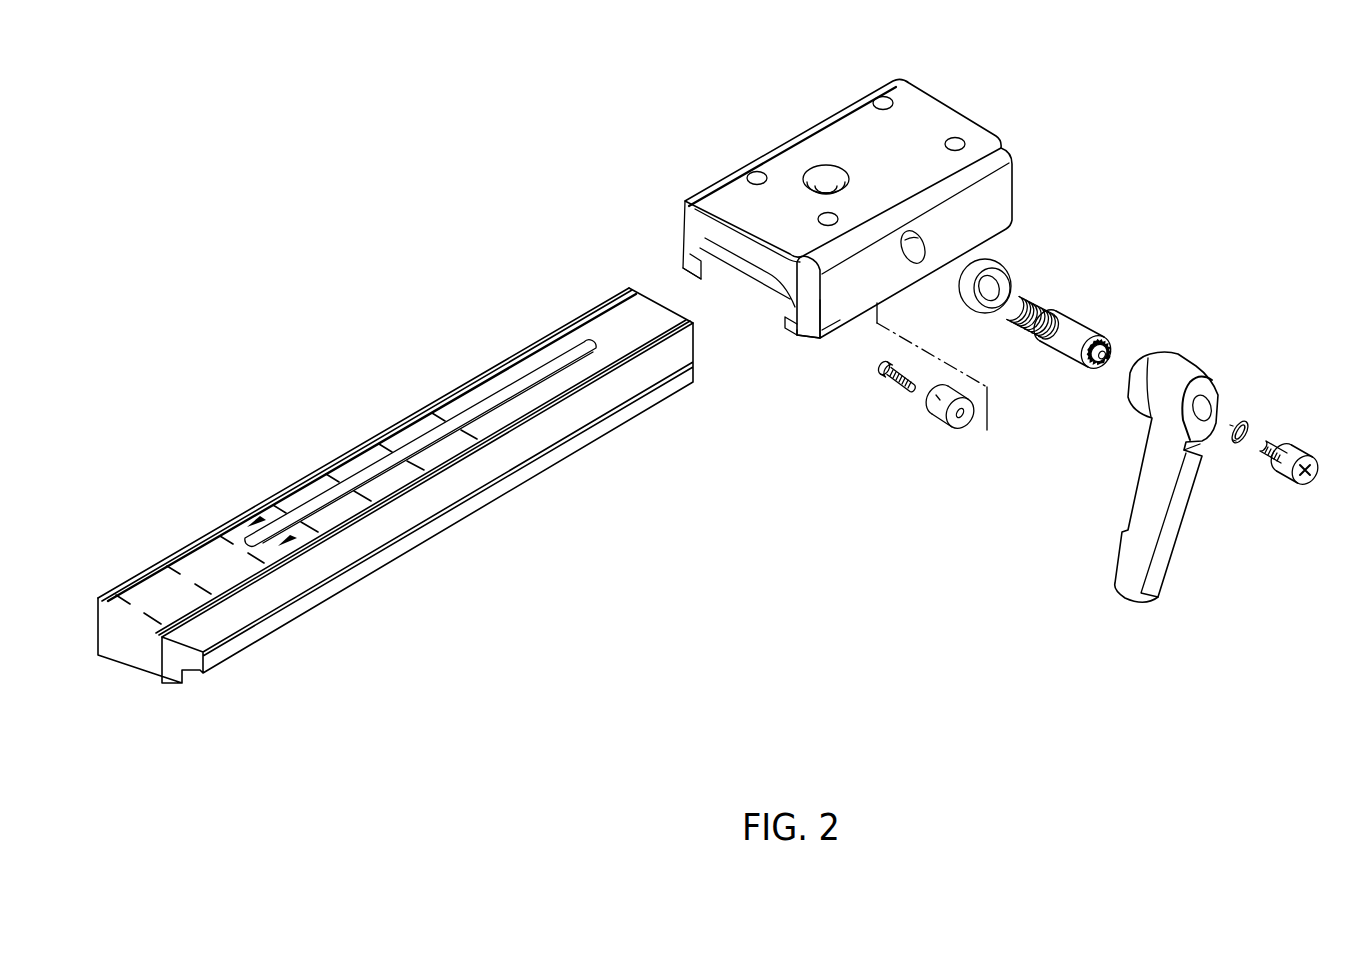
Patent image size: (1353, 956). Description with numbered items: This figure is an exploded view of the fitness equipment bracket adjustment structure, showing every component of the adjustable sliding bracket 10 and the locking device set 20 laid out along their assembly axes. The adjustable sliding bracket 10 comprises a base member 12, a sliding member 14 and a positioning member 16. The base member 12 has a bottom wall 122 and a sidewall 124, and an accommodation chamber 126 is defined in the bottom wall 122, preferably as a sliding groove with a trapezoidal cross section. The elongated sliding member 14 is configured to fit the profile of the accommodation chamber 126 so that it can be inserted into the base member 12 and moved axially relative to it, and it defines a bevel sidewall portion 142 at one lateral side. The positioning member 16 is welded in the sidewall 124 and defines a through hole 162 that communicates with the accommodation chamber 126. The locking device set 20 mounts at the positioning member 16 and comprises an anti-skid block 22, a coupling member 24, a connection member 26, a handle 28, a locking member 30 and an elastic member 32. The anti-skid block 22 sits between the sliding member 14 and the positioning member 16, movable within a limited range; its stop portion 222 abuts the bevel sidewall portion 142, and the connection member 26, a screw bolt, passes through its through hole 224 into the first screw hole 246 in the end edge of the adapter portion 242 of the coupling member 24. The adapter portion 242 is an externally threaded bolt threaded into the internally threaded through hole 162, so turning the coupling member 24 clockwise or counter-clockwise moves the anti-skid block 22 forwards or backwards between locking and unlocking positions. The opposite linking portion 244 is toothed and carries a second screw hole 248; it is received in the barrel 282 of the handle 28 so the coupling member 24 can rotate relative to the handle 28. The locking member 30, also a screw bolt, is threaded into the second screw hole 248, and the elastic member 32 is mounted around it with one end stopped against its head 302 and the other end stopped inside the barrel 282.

The adjustable sliding bracket 10 is at (465, 219).
The base member 12 is at (778, 167).
The bottom wall 122 is at (792, 333).
The sidewall 124 is at (837, 302).
The accommodation chamber 126 is at (765, 285).
The sliding member 14 is at (397, 415).
The bevel sidewall portion 142 is at (468, 482).
The positioning member 16 is at (1000, 272).
The through hole 162 is at (998, 287).
The locking device set 20 is at (1173, 241).
The anti-skid block 22 is at (958, 424).
The stop portion 222 is at (936, 410).
The through hole 224 is at (966, 418).
The coupling member 24 is at (1080, 331).
The adapter portion 242 is at (1034, 340).
The linking portion 244 is at (1110, 345).
The first screw hole 246 is at (1025, 312).
The second screw hole 248 is at (1118, 352).
The connection member 26 is at (888, 387).
The handle 28 is at (1213, 344).
The barrel 282 is at (1158, 410).
The locking member 30 is at (1295, 447).
The head 302 is at (1305, 483).
The elastic member 32 is at (1242, 426).